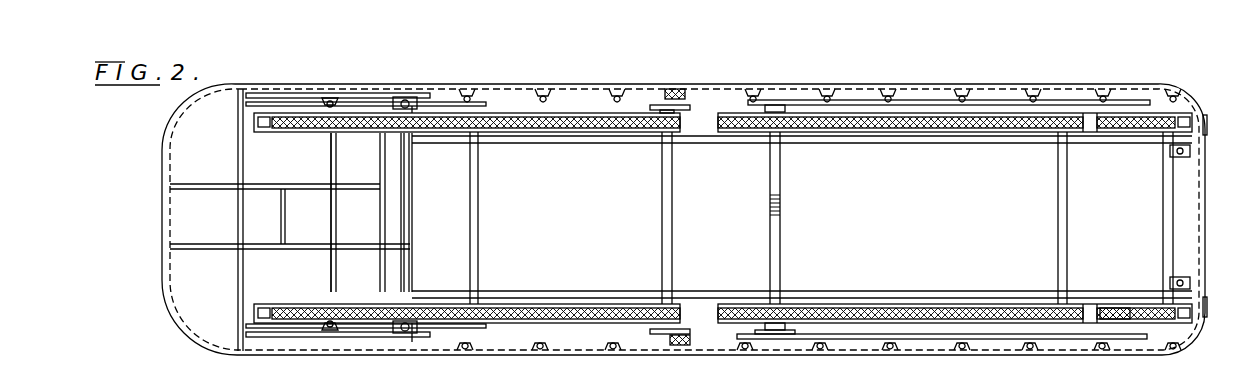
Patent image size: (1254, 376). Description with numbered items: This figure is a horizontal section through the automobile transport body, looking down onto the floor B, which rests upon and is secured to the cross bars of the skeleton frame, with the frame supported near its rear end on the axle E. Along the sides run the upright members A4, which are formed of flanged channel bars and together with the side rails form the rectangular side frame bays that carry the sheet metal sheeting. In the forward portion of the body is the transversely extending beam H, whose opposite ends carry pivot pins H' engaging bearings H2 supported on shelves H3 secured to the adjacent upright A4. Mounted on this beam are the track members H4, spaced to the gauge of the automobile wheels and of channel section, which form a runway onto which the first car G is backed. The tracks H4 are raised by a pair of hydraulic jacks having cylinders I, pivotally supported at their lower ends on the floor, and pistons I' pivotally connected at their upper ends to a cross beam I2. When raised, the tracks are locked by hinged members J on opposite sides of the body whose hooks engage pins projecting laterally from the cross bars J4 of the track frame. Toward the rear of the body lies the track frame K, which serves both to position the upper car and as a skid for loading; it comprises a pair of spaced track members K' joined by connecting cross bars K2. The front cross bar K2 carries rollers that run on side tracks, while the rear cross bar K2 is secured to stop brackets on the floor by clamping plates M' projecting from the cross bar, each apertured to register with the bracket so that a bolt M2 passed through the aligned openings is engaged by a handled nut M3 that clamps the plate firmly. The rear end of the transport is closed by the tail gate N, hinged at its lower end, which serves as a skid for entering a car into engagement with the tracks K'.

The shelf H3 is at (270, 95).
The pivot pin H' is at (327, 189).
The bearing H2 is at (347, 96).
The track member H4 is at (523, 129).
The transversely extending beam H is at (344, 212).
The cross beam I2 is at (407, 153).
The cylinder I is at (668, 354).
The piston I' is at (775, 193).
The hinged member J is at (662, 98).
The cross bar of the track frame J4 is at (667, 253).
The track frame K is at (955, 288).
The track member K' is at (1030, 283).
The cross bar K2 is at (783, 205).
The floor B is at (580, 237).
The axle E is at (575, 349).
The upright member A4 is at (630, 343).
The first car G is at (299, 369).
The clamping plate M' is at (1153, 160).
The bolt M2 is at (1178, 283).
The handled nut M3 is at (1182, 160).
The tail gate N is at (1203, 283).